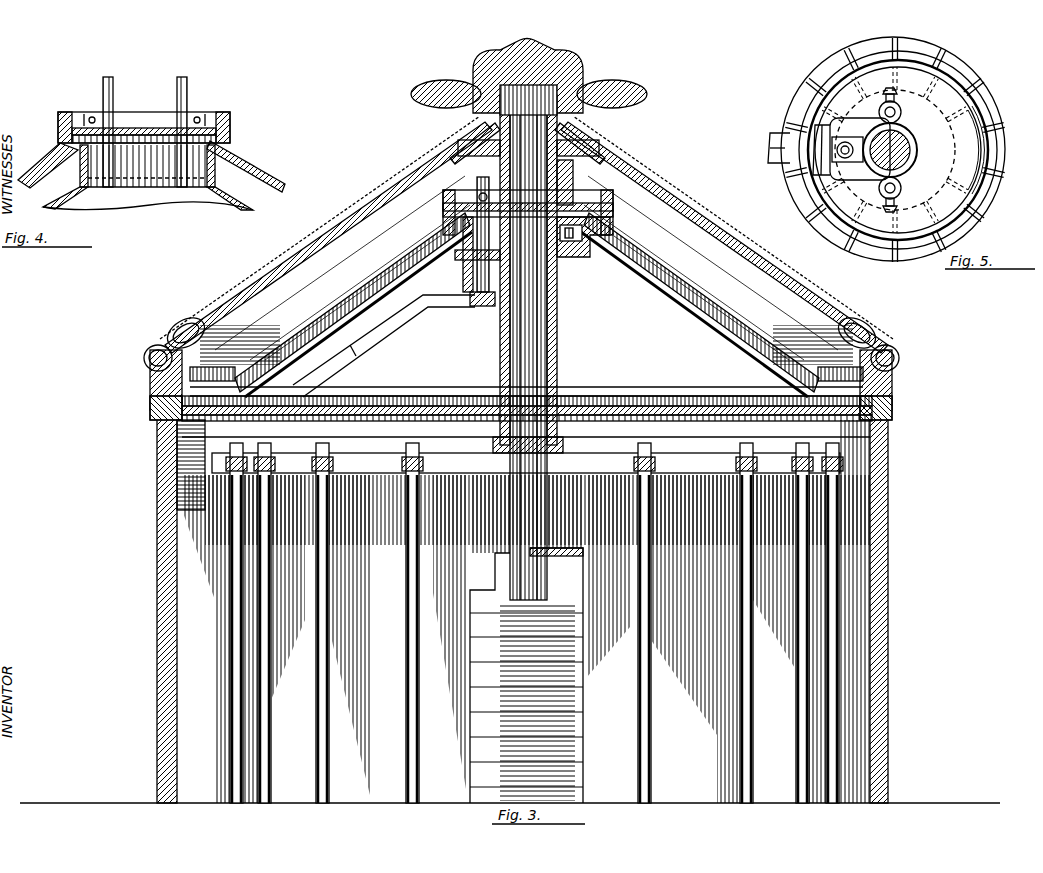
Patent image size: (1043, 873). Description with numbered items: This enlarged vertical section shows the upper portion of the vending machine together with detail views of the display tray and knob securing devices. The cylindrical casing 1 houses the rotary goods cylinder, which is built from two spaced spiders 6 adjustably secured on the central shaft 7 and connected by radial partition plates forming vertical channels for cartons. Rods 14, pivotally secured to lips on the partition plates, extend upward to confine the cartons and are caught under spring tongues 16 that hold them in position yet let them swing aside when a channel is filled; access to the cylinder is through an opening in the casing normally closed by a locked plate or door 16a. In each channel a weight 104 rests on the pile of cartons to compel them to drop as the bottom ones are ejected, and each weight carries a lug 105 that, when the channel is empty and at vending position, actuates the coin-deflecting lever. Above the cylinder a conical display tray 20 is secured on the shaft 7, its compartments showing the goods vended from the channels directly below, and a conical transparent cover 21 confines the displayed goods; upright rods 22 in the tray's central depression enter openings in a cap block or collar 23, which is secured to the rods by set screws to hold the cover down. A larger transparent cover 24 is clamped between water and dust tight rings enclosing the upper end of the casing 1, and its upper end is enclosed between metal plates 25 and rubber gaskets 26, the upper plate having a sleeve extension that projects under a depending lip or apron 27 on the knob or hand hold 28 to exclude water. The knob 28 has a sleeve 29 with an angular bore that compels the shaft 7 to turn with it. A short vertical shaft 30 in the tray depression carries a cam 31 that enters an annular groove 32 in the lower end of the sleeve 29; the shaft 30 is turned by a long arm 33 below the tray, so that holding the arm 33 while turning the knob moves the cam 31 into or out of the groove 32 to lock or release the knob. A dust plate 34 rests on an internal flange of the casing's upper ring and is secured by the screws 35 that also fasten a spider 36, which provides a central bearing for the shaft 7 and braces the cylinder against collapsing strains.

In FIG. 3, the cylindrical casing 1 is at (878, 625).
In FIG. 3, the spiders 6 is at (526, 463).
In FIG. 3, the central shaft 7 is at (540, 302).
In FIG. 5, the central shaft 7 is at (917, 160).
In FIG. 3, the rods 14 is at (240, 448).
In FIG. 3, the spring tongues 16 is at (300, 462).
In FIG. 3, the plate or door 16a is at (170, 637).
In FIG. 3, the display tray 20 is at (662, 322).
In FIG. 4, the display tray 20 is at (210, 206).
In FIG. 5, the display tray 20 is at (1005, 196).
In FIG. 3, the conical transparent cover 21 is at (322, 318).
In FIG. 4, the conical transparent cover 21 is at (60, 150).
In FIG. 5, the conical transparent cover 21 is at (1000, 162).
In FIG. 4, the upright rods 22 is at (104, 100).
In FIG. 5, the upright rods 22 is at (902, 114).
In FIG. 3, the cap block or collar 23 is at (612, 210).
In FIG. 4, the cap block or collar 23 is at (238, 130).
In FIG. 5, the cap block or collar 23 is at (895, 150).
In FIG. 3, the transparent cover 24 is at (290, 282).
In FIG. 3, the metal plates 25 is at (625, 160).
In FIG. 3, the rubber gaskets 26 is at (588, 110).
In FIG. 3, the depending lip or apron 27 is at (470, 108).
In FIG. 3, the knob or hand hold 28 is at (545, 68).
In FIG. 3, the sleeve 29 is at (500, 164).
In FIG. 5, the sleeve 29 is at (882, 197).
In FIG. 3, the short vertical shaft 30 is at (455, 238).
In FIG. 5, the short vertical shaft 30 is at (851, 149).
In FIG. 3, the cam 31 is at (477, 186).
In FIG. 5, the cam 31 is at (848, 159).
In FIG. 3, the annular groove 32 is at (580, 170).
In FIG. 5, the annular groove 32 is at (884, 102).
In FIG. 5, the long arm 33 is at (774, 139).
In FIG. 3, the dust plate 34 is at (318, 382).
In FIG. 3, the screws 35 is at (292, 408).
In FIG. 3, the spider 36 is at (472, 404).
In FIG. 3, the weight 104 is at (526, 675).
In FIG. 3, the lug 105 is at (556, 556).